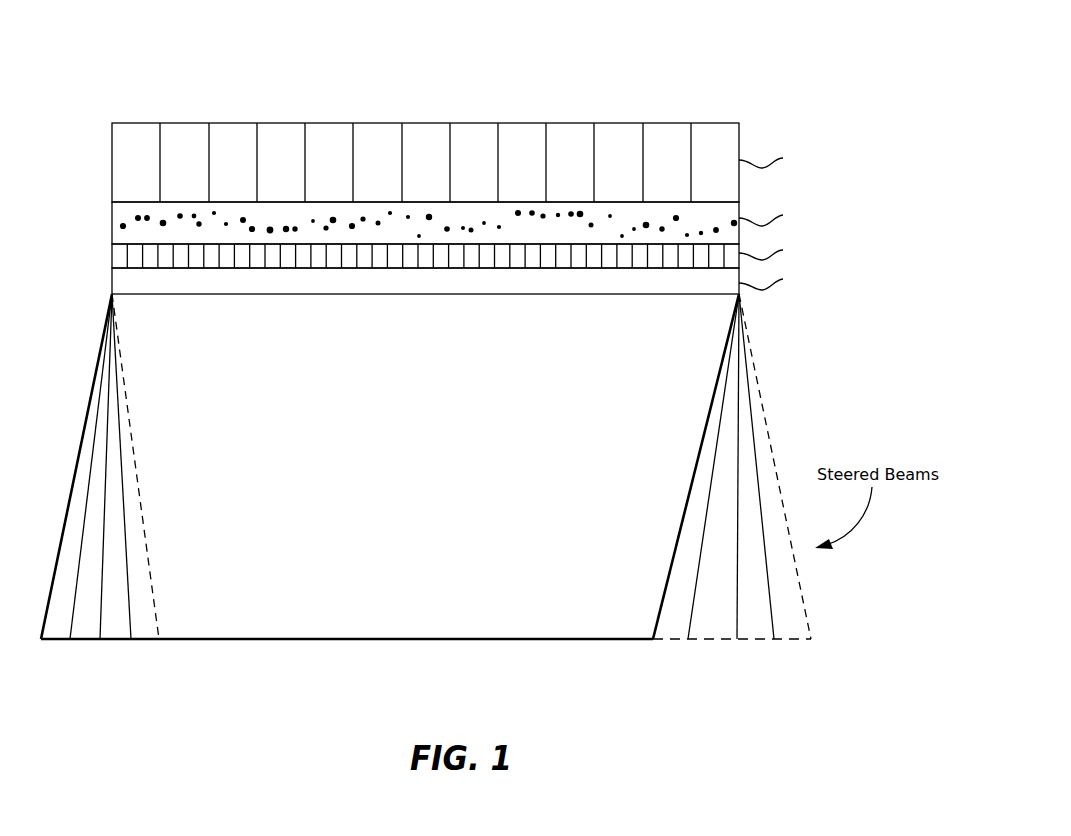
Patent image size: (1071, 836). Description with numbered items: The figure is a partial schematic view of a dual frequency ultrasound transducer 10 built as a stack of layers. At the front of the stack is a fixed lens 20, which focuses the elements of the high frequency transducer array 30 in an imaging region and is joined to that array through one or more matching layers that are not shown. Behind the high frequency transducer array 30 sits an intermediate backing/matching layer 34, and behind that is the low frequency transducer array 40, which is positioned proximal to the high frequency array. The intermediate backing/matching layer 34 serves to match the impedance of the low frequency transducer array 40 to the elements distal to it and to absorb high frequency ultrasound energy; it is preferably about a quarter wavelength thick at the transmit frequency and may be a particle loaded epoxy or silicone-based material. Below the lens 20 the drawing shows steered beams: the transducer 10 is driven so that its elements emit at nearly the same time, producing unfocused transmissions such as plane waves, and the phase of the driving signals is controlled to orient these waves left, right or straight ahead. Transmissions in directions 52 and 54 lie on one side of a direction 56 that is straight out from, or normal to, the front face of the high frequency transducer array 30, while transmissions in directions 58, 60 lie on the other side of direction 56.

The dual frequency ultrasound transducer 10 is at (728, 73).
The fixed lens 20 is at (112, 283).
The high frequency transducer array 30 is at (112, 254).
The intermediate backing/matching layer 34 is at (112, 222).
The low frequency transducer array 40 is at (112, 153).
The direction 52 is at (43, 627).
The direction 54 is at (69, 634).
The direction 56 is at (100, 632).
The direction 58 is at (776, 624).
The direction 60 is at (806, 620).